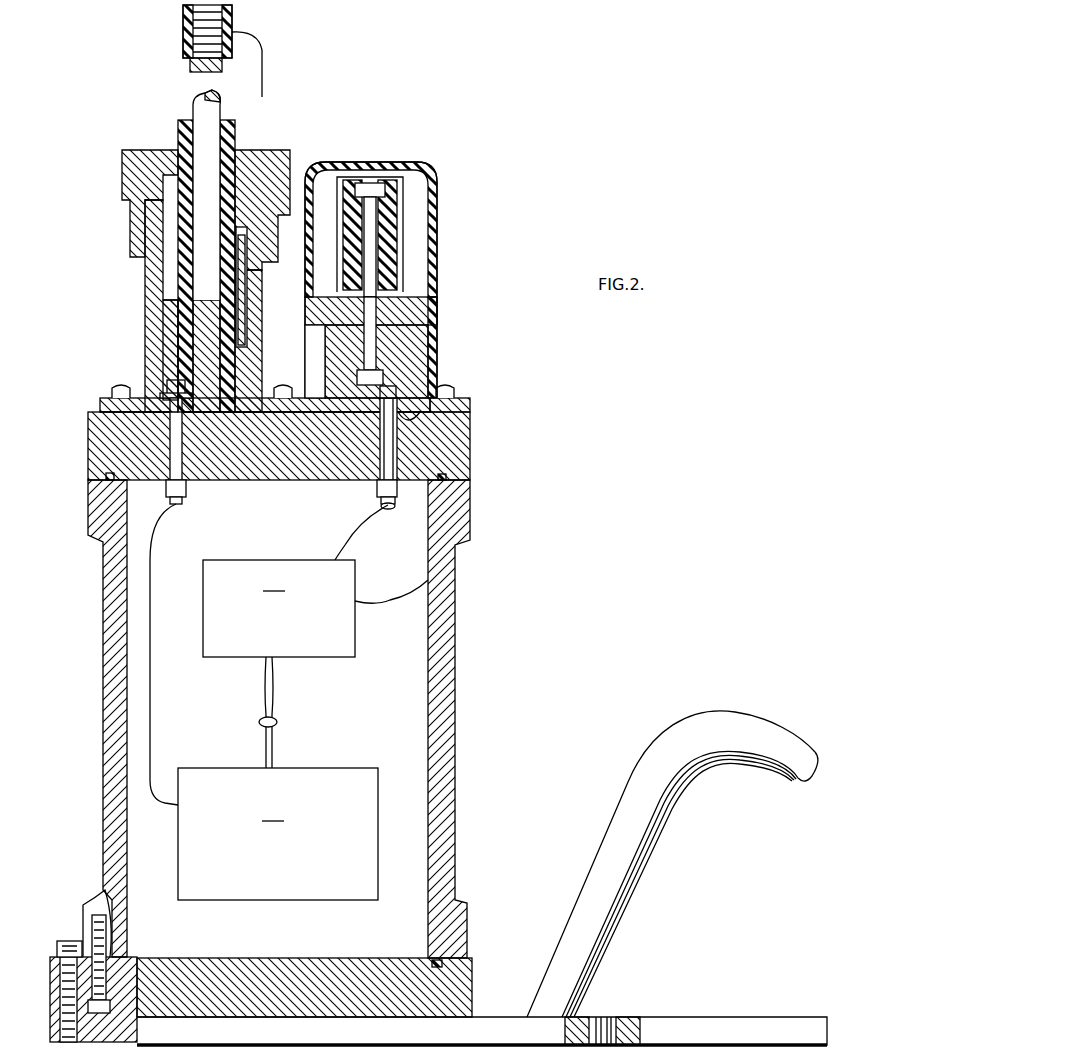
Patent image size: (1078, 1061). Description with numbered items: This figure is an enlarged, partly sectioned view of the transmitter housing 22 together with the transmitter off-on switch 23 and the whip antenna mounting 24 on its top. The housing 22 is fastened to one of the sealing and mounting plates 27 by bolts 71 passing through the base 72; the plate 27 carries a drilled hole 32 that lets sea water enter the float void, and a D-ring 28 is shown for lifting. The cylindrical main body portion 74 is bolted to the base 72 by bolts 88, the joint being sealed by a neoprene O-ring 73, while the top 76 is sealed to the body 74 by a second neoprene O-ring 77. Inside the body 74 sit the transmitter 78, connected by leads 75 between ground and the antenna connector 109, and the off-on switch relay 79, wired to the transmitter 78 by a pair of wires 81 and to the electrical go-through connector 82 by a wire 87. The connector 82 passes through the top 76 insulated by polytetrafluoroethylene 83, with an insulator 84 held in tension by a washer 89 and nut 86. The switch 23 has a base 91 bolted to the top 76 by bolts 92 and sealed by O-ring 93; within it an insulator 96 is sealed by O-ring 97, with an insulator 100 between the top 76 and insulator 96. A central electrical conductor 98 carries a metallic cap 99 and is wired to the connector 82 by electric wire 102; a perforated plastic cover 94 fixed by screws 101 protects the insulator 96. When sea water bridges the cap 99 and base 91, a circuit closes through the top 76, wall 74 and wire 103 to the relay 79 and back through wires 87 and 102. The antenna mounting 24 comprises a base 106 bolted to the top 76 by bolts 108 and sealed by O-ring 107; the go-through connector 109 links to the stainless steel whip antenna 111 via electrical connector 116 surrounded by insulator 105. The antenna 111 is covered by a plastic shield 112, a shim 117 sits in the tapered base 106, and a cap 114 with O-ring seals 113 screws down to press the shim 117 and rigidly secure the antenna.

The transmitter housing 22 is at (462, 628).
The transmitter off-on switch 23 is at (445, 247).
The whip antenna mounting 24 is at (138, 272).
The sealing and mounting plate 27 is at (475, 1030).
The D-ring 28 is at (668, 742).
The hole 32 is at (600, 1030).
The bolt 71 is at (70, 944).
The base 72 is at (472, 980).
The neoprene O-ring 73 is at (444, 962).
The main body portion 74 is at (108, 566).
The leads 75 is at (158, 792).
The top 76 is at (90, 456).
The second neoprene O-ring 77 is at (444, 482).
The transmitter 78 is at (278, 834).
The off-on switch relay 79 is at (279, 608).
The wires 81 is at (278, 724).
The electrical go-through connector 82 is at (394, 453).
The polytetrafluoroethylene 83 is at (396, 470).
The insulator 84 is at (377, 490).
The nut 86 is at (388, 504).
The wire 87 is at (342, 549).
The bolt 88 is at (96, 935).
The washer 89 is at (395, 504).
The base 91 is at (437, 360).
The bolt 92 is at (285, 388).
The O-ring 93 is at (462, 410).
The plastic cover 94 is at (437, 258).
The insulator 96 is at (392, 238).
The O-ring 97 is at (410, 355).
The electrical conductor 98 is at (368, 186).
The metallic cap 99 is at (400, 216).
The insulator 100 is at (419, 429).
The screws 101 is at (436, 305).
The electric wire 102 is at (430, 394).
The wire 103 is at (378, 606).
The insulator 105 is at (164, 394).
The base 106 is at (100, 403).
The O-ring 107 is at (140, 413).
The bolt 108 is at (114, 390).
The go-through connector 109 is at (188, 486).
The whip antenna 111 is at (218, 72).
The plastic shield 112 is at (230, 126).
The O-ring seal 113 is at (176, 152).
The cap 114 is at (282, 153).
The electrical connector 116 is at (168, 386).
The shim 117 is at (244, 165).